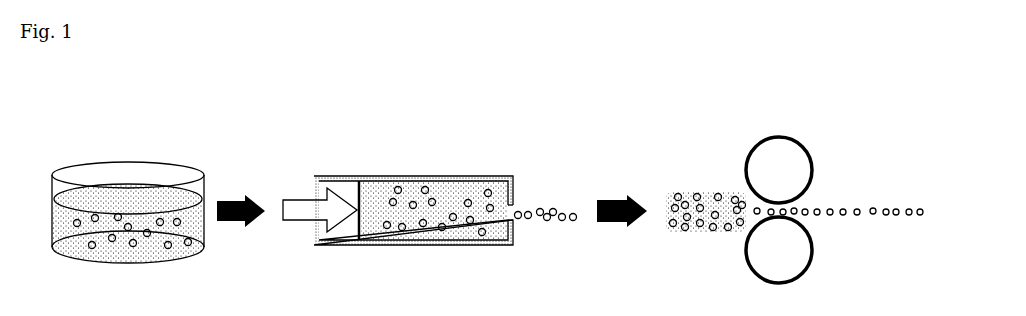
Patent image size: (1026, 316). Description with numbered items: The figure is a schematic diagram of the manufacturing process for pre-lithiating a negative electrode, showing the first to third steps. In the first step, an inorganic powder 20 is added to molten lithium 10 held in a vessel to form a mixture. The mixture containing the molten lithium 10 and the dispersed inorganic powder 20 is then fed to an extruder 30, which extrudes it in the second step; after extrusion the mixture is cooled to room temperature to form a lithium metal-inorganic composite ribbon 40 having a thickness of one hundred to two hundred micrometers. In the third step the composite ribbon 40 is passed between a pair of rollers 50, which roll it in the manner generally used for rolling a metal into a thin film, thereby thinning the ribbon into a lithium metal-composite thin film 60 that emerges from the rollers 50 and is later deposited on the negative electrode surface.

The molten lithium 10 is at (52, 225).
The inorganic powder 20 is at (118, 214).
The extruder 30 is at (393, 176).
The lithium metal-inorganic composite ribbon 40 is at (580, 203).
The roller 50 is at (779, 136).
The lithium metal-composite thin film 60 is at (922, 196).